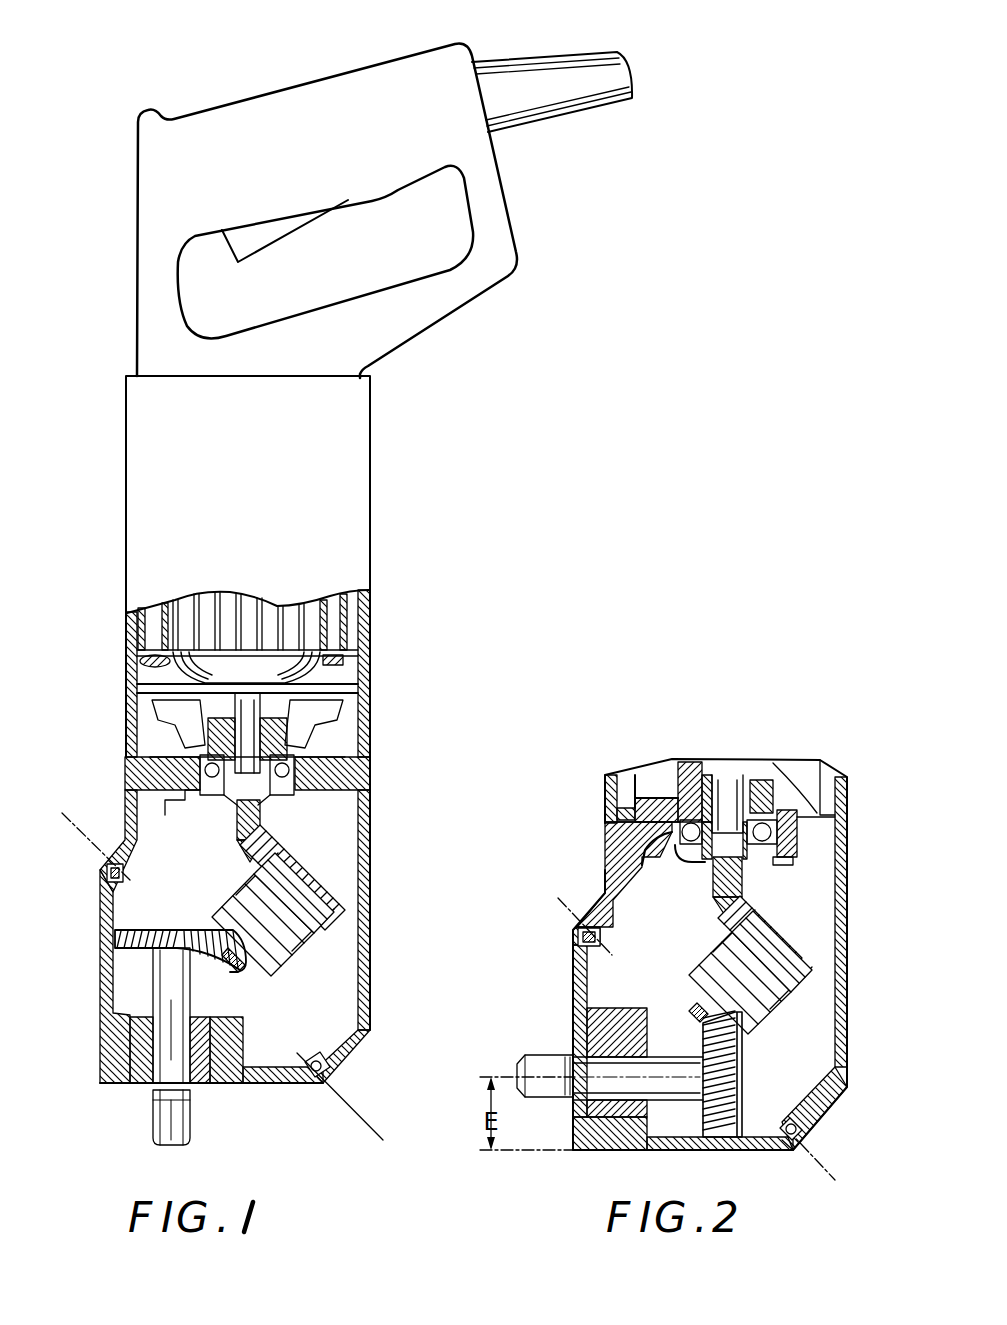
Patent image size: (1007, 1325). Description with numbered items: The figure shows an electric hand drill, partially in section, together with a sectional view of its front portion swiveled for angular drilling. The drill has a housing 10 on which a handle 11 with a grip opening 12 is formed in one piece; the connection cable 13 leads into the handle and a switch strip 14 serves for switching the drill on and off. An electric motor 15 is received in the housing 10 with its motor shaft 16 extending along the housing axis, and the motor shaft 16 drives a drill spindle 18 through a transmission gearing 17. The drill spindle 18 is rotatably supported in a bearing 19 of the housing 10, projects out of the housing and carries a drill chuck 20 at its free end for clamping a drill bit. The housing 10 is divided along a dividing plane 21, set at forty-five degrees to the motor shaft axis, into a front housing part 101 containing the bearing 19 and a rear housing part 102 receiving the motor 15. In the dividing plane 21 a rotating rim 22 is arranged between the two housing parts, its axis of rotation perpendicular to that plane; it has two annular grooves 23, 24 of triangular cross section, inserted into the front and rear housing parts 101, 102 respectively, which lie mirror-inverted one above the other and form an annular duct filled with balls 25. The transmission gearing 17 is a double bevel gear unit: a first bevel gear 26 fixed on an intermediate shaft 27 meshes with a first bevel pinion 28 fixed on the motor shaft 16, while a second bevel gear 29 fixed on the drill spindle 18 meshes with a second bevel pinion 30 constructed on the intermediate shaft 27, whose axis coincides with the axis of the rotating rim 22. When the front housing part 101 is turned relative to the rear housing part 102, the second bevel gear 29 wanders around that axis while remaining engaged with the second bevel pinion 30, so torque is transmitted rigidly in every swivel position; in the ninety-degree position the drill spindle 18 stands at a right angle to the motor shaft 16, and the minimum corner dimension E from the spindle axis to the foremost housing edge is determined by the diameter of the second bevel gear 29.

In FIG. 1, the housing 10 is at (116, 399).
In FIG. 2, the housing 10 is at (851, 776).
In FIG. 1, the handle 11 is at (290, 88).
In FIG. 1, the grip opening 12 is at (458, 222).
In FIG. 1, the connection cable 13 is at (550, 80).
In FIG. 1, the switch strip 14 is at (252, 233).
In FIG. 1, the electric motor 15 is at (268, 662).
In FIG. 1, the motor shaft 16 is at (247, 740).
In FIG. 2, the motor shaft 16 is at (727, 783).
In FIG. 1, the transmission gearing 17 is at (330, 953).
In FIG. 2, the transmission gearing 17 is at (822, 1036).
In FIG. 1, the drill spindle 18 is at (162, 1073).
In FIG. 2, the drill spindle 18 is at (690, 1083).
In FIG. 1, the bearing 19 is at (130, 1030).
In FIG. 2, the bearing 19 is at (623, 1150).
In FIG. 1, the drill chuck 20 is at (189, 1120).
In FIG. 2, the drill chuck 20 is at (593, 1150).
In FIG. 1, the dividing plane 21 is at (62, 813).
In FIG. 2, the dividing plane 21 is at (817, 1167).
In FIG. 1, the rotating rim 22 is at (107, 886).
In FIG. 2, the rotating rim 22 is at (578, 940).
In FIG. 1, the annular groove 23 is at (317, 1088).
In FIG. 2, the annular groove 23 is at (793, 1153).
In FIG. 1, the annular groove 24 is at (307, 1057).
In FIG. 2, the annular groove 24 is at (785, 1118).
In FIG. 1, the balls 25 is at (326, 1074).
In FIG. 2, the balls 25 is at (803, 1130).
In FIG. 1, the first bevel gear 26 is at (326, 878).
In FIG. 2, the first bevel gear 26 is at (778, 933).
In FIG. 1, the intermediate shaft 27 is at (263, 917).
In FIG. 2, the intermediate shaft 27 is at (752, 988).
In FIG. 1, the first bevel pinion 28 is at (262, 818).
In FIG. 2, the first bevel pinion 28 is at (742, 880).
In FIG. 1, the second bevel gear 29 is at (143, 950).
In FIG. 2, the second bevel gear 29 is at (730, 1150).
In FIG. 1, the second bevel pinion 30 is at (247, 967).
In FIG. 2, the second bevel pinion 30 is at (697, 1010).
In FIG. 1, the front housing part 101 is at (105, 950).
In FIG. 2, the front housing part 101 is at (580, 1003).
In FIG. 1, the rear housing part 102 is at (371, 842).
In FIG. 2, the rear housing part 102 is at (848, 857).